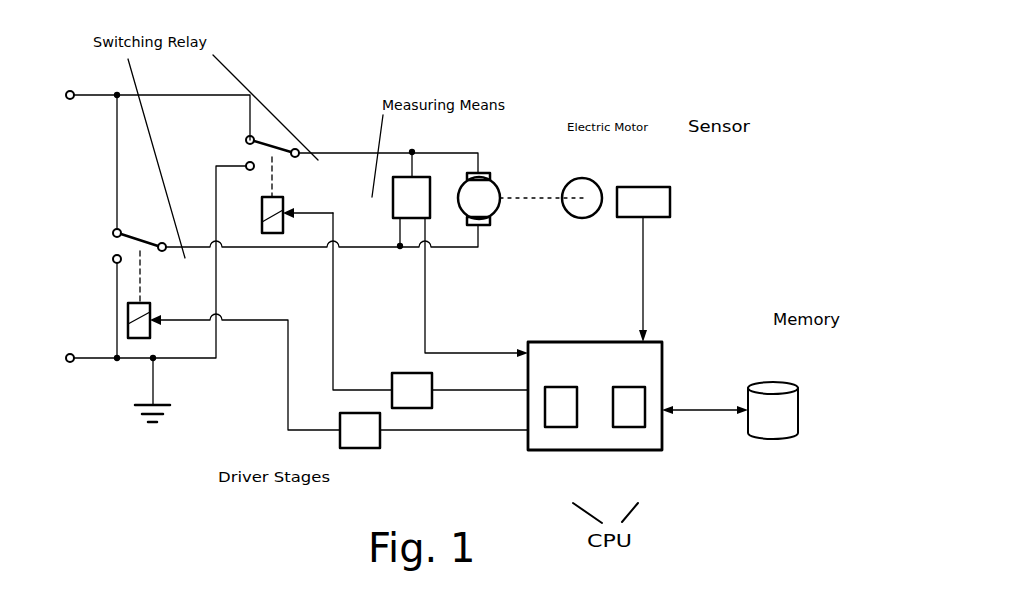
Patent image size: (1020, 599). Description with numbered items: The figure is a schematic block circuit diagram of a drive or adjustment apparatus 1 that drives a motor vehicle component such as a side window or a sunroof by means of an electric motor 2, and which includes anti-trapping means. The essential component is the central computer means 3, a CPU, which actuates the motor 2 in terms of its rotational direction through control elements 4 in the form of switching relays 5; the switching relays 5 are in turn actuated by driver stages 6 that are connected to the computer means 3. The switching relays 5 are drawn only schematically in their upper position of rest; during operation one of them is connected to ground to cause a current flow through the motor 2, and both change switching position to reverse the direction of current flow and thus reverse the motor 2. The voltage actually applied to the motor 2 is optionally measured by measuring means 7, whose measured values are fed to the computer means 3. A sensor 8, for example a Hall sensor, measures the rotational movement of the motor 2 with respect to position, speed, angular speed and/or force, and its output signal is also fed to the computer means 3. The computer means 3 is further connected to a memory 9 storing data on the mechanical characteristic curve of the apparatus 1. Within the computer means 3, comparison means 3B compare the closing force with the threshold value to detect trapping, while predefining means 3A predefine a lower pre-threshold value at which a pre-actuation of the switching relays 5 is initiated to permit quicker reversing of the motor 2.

The drive apparatus 1 is at (722, 74).
The electric motor 2 is at (480, 197).
The computer means 3 is at (595, 386).
The predefining means 3A is at (628, 428).
The comparison means 3B is at (555, 428).
The control elements 4 is at (263, 143).
The switching relays 5 is at (285, 203).
The driver stages 6 is at (272, 450).
The measuring means 7 is at (393, 197).
The sensor 8 is at (642, 187).
The memory 9 is at (773, 386).